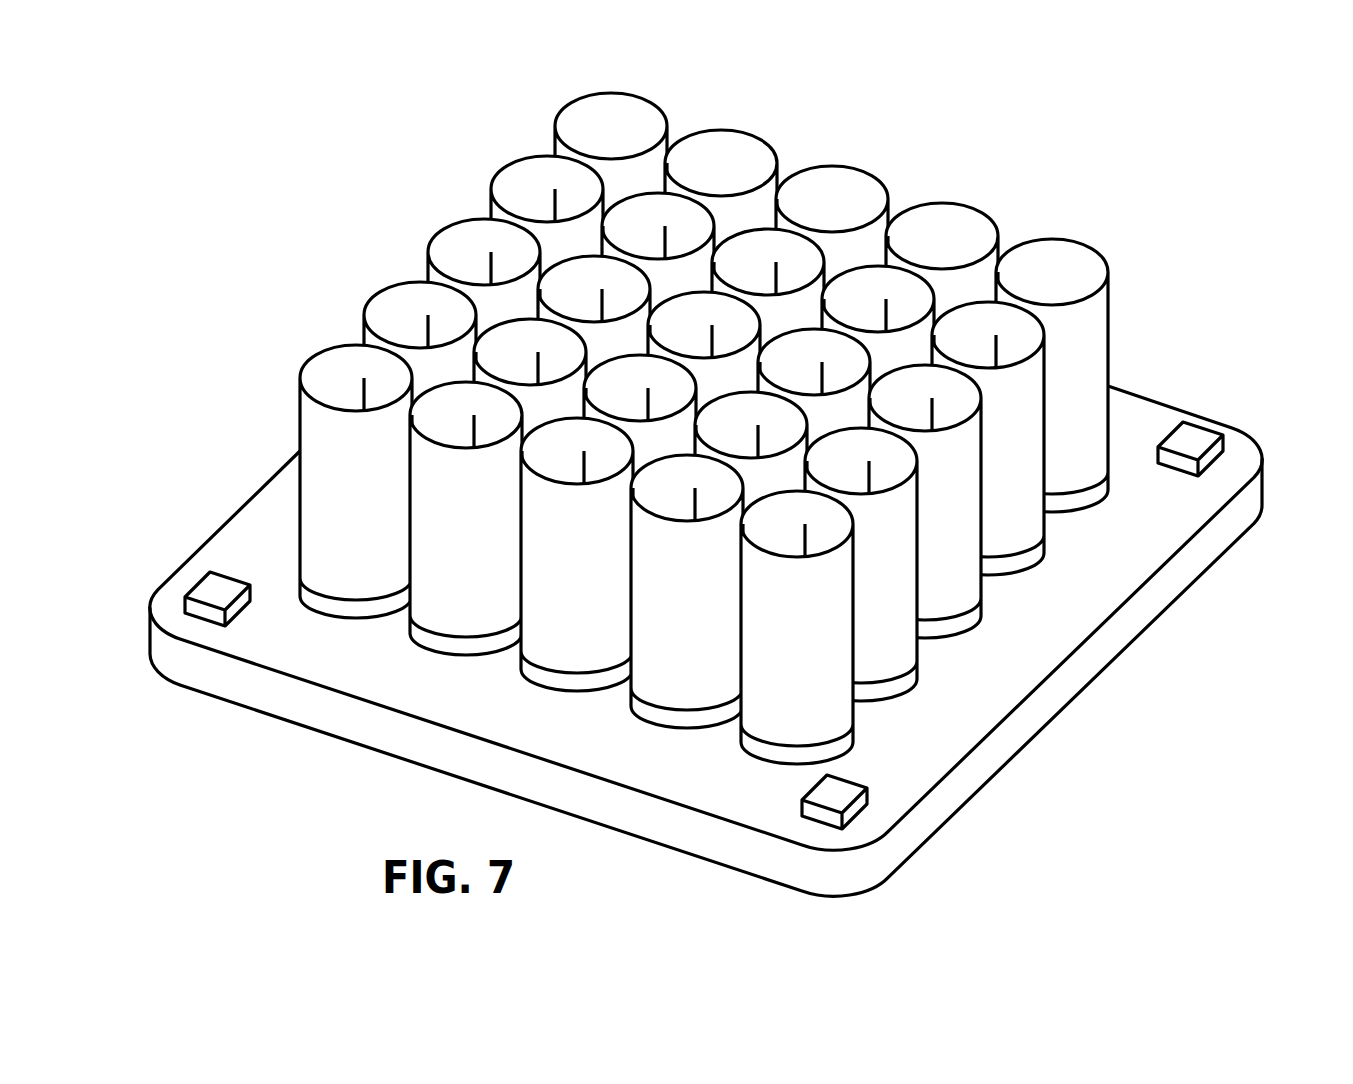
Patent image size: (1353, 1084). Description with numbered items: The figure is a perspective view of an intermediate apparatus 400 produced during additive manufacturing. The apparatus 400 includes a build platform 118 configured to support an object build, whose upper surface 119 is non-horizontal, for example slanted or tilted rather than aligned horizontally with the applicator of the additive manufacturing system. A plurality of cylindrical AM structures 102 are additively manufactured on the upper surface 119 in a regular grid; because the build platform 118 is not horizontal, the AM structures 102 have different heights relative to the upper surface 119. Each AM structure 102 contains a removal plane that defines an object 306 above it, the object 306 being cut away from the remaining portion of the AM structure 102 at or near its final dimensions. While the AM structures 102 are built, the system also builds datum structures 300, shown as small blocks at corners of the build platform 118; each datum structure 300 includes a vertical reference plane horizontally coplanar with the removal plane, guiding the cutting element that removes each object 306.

The AM structure 102 is at (719, 426).
The object 306 is at (340, 415).
The datum structure 300 is at (207, 592).
The build platform 118 is at (1007, 737).
The upper surface 119 is at (1007, 670).
The intermediate apparatus 400 is at (703, 502).